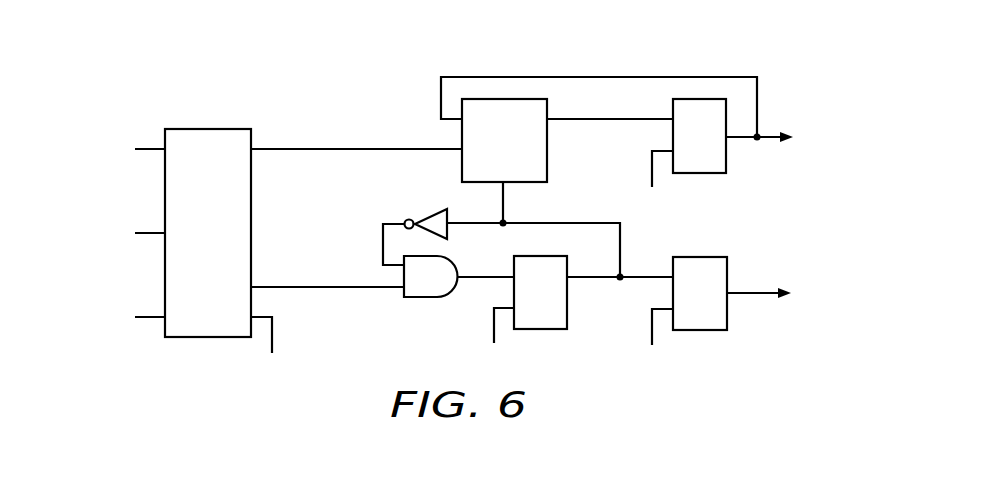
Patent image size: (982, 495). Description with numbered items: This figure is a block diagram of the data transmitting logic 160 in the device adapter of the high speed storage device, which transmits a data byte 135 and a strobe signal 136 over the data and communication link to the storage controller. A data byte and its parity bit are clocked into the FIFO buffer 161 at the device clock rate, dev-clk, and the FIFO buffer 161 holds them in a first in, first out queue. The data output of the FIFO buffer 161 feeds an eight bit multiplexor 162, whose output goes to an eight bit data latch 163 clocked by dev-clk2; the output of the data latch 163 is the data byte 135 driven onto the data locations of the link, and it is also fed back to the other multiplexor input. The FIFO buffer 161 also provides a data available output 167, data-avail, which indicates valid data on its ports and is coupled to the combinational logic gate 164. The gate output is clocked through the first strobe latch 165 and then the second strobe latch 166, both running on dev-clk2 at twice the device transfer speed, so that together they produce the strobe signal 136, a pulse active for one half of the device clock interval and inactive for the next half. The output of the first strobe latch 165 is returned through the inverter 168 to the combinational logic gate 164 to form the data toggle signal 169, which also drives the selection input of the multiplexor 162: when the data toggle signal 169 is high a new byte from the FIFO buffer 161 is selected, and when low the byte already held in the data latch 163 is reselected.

The data transmitting logic 160 is at (312, 93).
The FIFO buffer 161 is at (208, 129).
The multiplexor 162 is at (547, 155).
The data latch 163 is at (726, 157).
The combinational logic gate 164 is at (430, 298).
The first strobe latch 165 is at (567, 305).
The second strobe latch 166 is at (727, 272).
The data available output 167 is at (346, 289).
The inverter 168 is at (424, 210).
The data toggle signal 169 is at (620, 245).
The data byte 135 is at (811, 114).
The strobe signal 136 is at (833, 318).